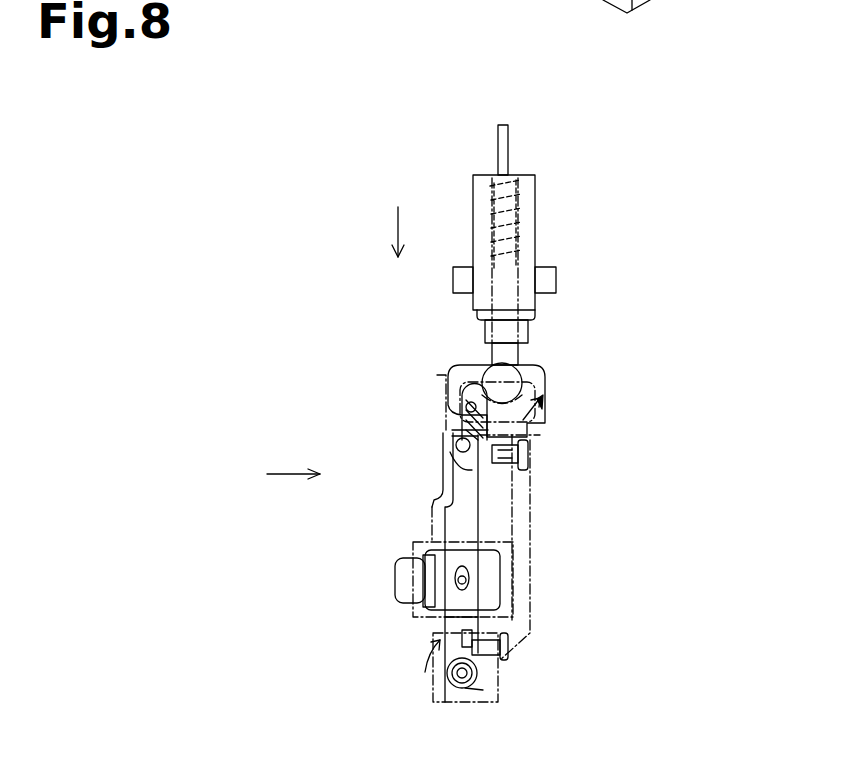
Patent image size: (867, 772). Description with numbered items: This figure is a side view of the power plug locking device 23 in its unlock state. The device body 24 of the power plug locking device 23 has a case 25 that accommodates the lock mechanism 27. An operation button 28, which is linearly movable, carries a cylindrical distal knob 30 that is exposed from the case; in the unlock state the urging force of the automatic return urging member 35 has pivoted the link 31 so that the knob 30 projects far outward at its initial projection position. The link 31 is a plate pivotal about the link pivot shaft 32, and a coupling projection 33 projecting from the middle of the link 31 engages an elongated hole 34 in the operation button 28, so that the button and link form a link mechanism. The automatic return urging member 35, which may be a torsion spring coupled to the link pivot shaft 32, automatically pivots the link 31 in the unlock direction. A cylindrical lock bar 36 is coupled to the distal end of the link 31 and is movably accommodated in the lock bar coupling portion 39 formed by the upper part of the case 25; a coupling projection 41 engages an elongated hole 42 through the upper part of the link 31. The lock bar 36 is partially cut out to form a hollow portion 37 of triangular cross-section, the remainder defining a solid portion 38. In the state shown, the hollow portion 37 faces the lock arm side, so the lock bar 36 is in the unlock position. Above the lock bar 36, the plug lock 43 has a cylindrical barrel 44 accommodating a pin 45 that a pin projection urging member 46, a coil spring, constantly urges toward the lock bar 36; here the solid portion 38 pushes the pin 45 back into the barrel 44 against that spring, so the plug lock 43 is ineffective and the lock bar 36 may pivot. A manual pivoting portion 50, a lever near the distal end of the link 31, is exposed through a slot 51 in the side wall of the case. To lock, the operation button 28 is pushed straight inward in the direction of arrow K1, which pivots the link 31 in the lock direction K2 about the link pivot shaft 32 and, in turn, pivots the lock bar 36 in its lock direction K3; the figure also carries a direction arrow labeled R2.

The power plug locking device 23 is at (333, 198).
The device body 24 is at (550, 381).
The case 25 is at (532, 575).
The lock mechanism 27 is at (443, 363).
The operation button 28 is at (393, 570).
The knob 30 is at (398, 587).
The link 31 is at (445, 511).
The link pivot shaft 32 is at (478, 670).
The coupling projection 33 is at (425, 545).
The elongated hole 34 is at (452, 587).
The automatic return urging member 35 is at (448, 680).
The lock bar 36 is at (482, 362).
The hollow portion 37 is at (545, 383).
The solid portion 38 is at (520, 370).
The lock bar coupling portion 39 is at (437, 375).
The coupling projection 41 is at (462, 407).
The elongated hole 42 is at (456, 437).
The plug lock 43 is at (535, 190).
The barrel 44 is at (535, 222).
The pin 45 is at (530, 345).
The pin projection urging member 46 is at (473, 217).
The manual pivoting portion 50 is at (467, 458).
The slot 51 is at (523, 447).
The inward direction K1 is at (290, 472).
The lock direction of link K2 is at (425, 667).
The lock direction of lock bar K3 is at (530, 427).
The direction R2 is at (398, 222).